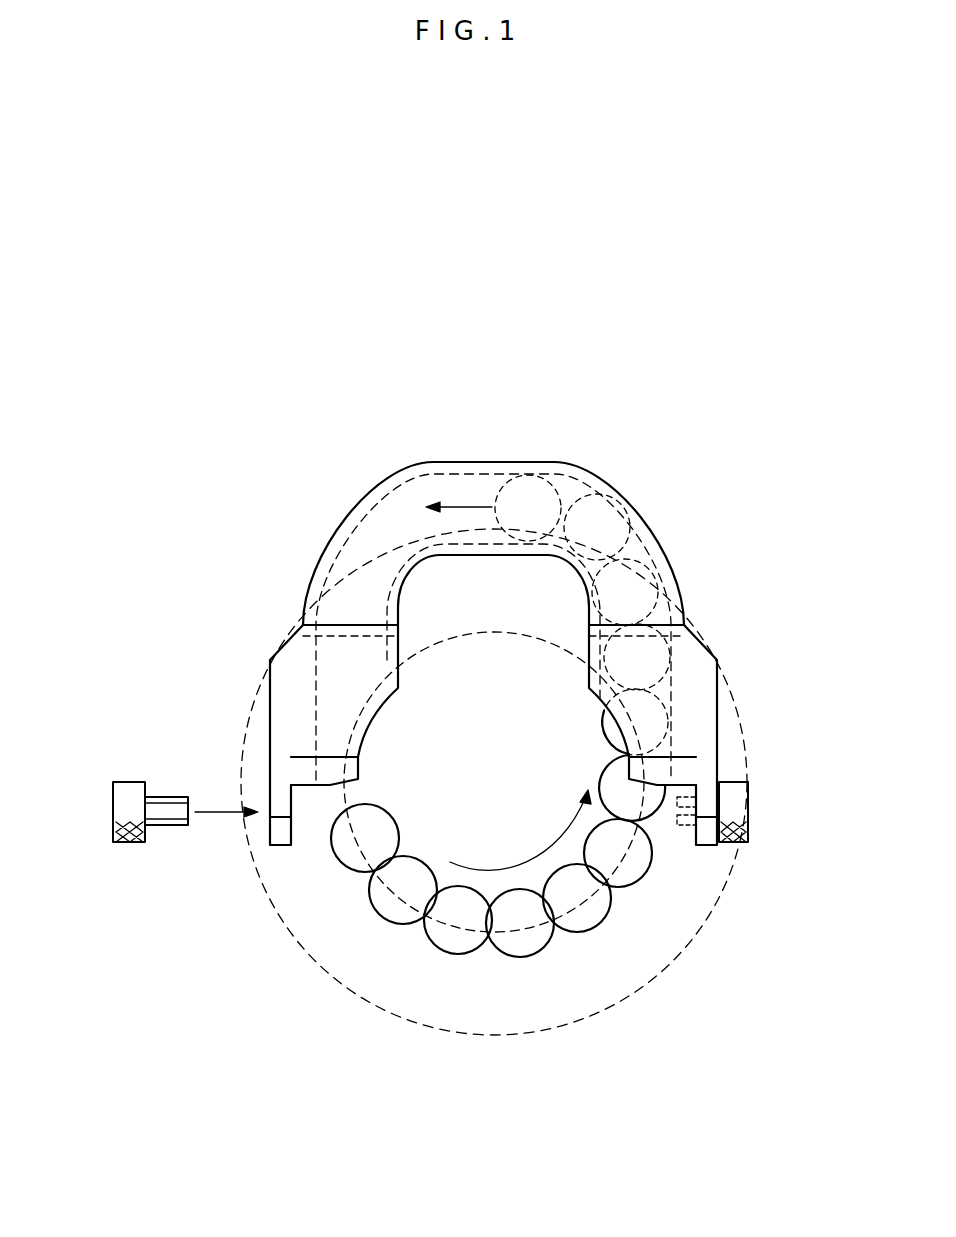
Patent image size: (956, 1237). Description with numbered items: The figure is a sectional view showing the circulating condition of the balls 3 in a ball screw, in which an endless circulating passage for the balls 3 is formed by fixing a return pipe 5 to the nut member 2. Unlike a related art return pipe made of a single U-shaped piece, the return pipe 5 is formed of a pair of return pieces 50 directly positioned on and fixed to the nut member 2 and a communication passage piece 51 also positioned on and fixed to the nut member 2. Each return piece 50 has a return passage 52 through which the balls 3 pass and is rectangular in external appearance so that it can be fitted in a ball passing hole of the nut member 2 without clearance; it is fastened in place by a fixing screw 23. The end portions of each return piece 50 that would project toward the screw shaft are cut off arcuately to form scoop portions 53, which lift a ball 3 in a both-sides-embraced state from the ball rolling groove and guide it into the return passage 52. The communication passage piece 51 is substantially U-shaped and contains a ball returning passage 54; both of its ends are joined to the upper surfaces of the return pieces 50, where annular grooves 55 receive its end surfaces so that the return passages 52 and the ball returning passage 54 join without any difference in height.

The nut member 2 is at (298, 944).
The balls 3 is at (457, 943).
The return pipe 5 is at (606, 462).
The fixing screw 23 is at (133, 843).
The return piece 50 is at (271, 757).
The communication passage piece 51 is at (338, 520).
The return passage 52 is at (315, 687).
The scoop portion 53 is at (383, 746).
The ball returning passage 54 is at (397, 484).
The annular groove 55 is at (353, 637).